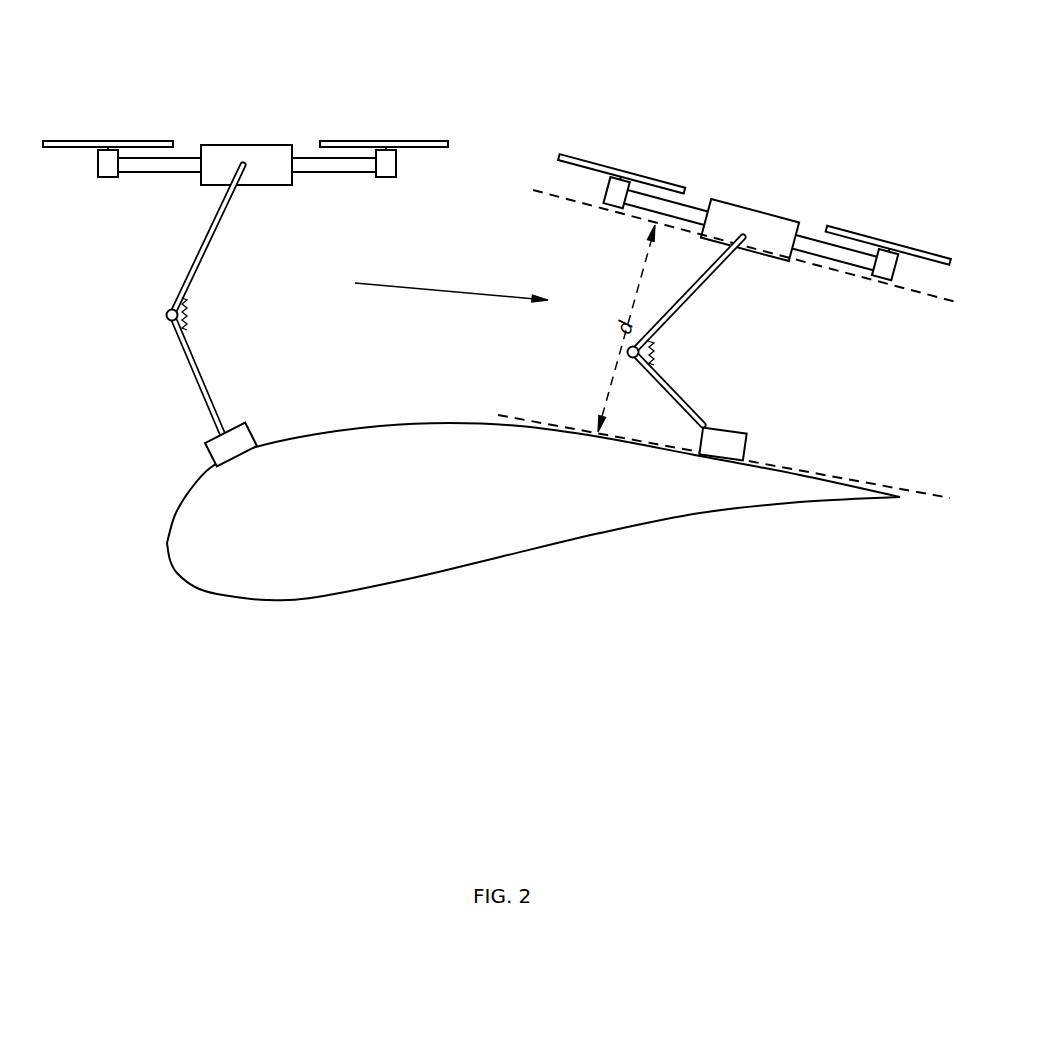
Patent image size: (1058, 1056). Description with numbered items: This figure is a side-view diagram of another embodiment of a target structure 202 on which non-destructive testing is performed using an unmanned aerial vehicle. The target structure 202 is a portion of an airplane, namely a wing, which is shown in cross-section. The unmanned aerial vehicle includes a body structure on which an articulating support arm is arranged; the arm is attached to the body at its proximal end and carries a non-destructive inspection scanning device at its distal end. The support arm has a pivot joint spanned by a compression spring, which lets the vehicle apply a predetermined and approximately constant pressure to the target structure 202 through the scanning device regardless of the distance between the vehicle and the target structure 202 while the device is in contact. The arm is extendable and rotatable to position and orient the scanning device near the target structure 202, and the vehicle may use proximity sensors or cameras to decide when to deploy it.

The target structure 202 is at (433, 518).